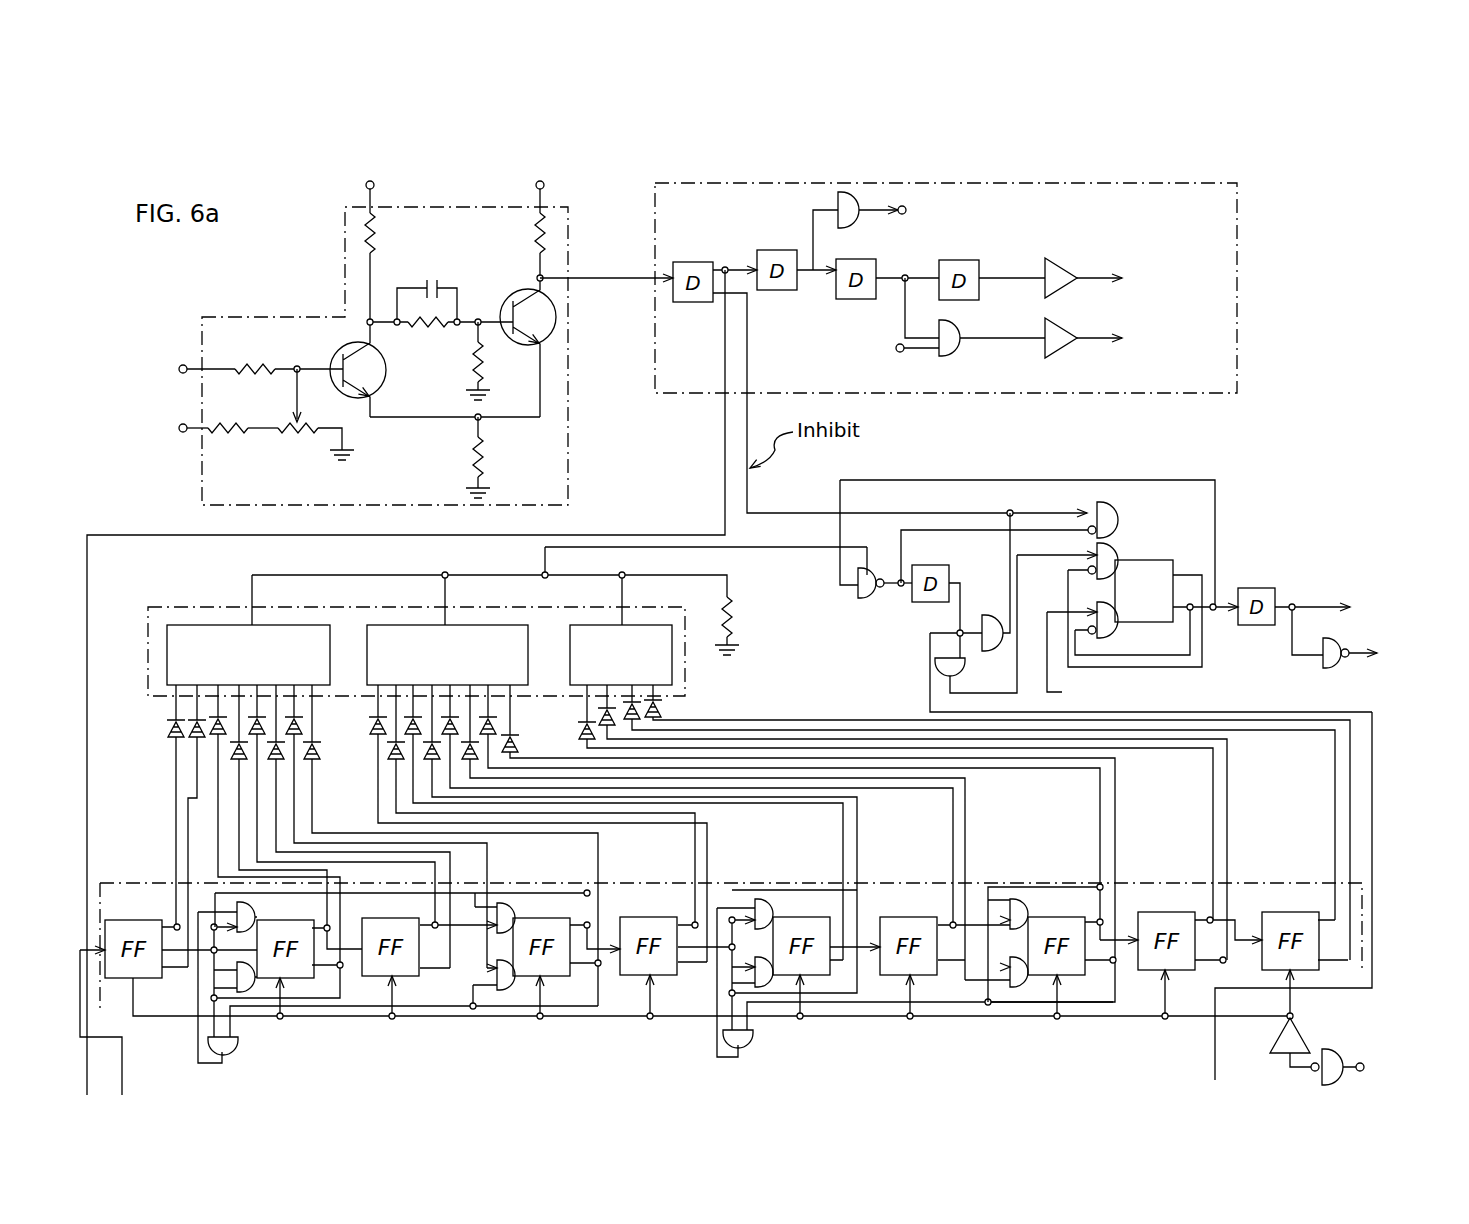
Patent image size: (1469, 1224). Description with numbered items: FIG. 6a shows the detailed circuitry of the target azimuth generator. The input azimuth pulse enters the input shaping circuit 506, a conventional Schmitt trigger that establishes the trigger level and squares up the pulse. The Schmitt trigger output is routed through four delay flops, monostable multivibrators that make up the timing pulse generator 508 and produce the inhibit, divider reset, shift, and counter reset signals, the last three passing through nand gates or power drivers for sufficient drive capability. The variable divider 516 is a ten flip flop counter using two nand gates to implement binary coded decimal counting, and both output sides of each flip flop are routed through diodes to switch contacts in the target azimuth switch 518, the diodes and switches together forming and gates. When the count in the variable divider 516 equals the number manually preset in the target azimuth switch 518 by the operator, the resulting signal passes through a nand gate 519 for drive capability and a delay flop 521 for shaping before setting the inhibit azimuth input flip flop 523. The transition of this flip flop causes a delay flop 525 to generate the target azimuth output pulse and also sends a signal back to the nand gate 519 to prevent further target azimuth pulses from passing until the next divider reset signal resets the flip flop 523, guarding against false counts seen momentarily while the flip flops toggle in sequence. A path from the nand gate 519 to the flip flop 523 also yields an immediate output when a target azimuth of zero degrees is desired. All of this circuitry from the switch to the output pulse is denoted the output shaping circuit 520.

The input shaping circuit 506 is at (570, 447).
The timing pulse generator 508 is at (1240, 210).
The variable divider 516 is at (903, 1032).
The target azimuth switch 518 is at (148, 615).
The nand gate 519 is at (857, 600).
The output shaping circuit 520 is at (1348, 452).
The delay flop 521 is at (910, 602).
The inhibit azimuth input flip flop 523 is at (1185, 545).
The delay flop 525 is at (1276, 588).